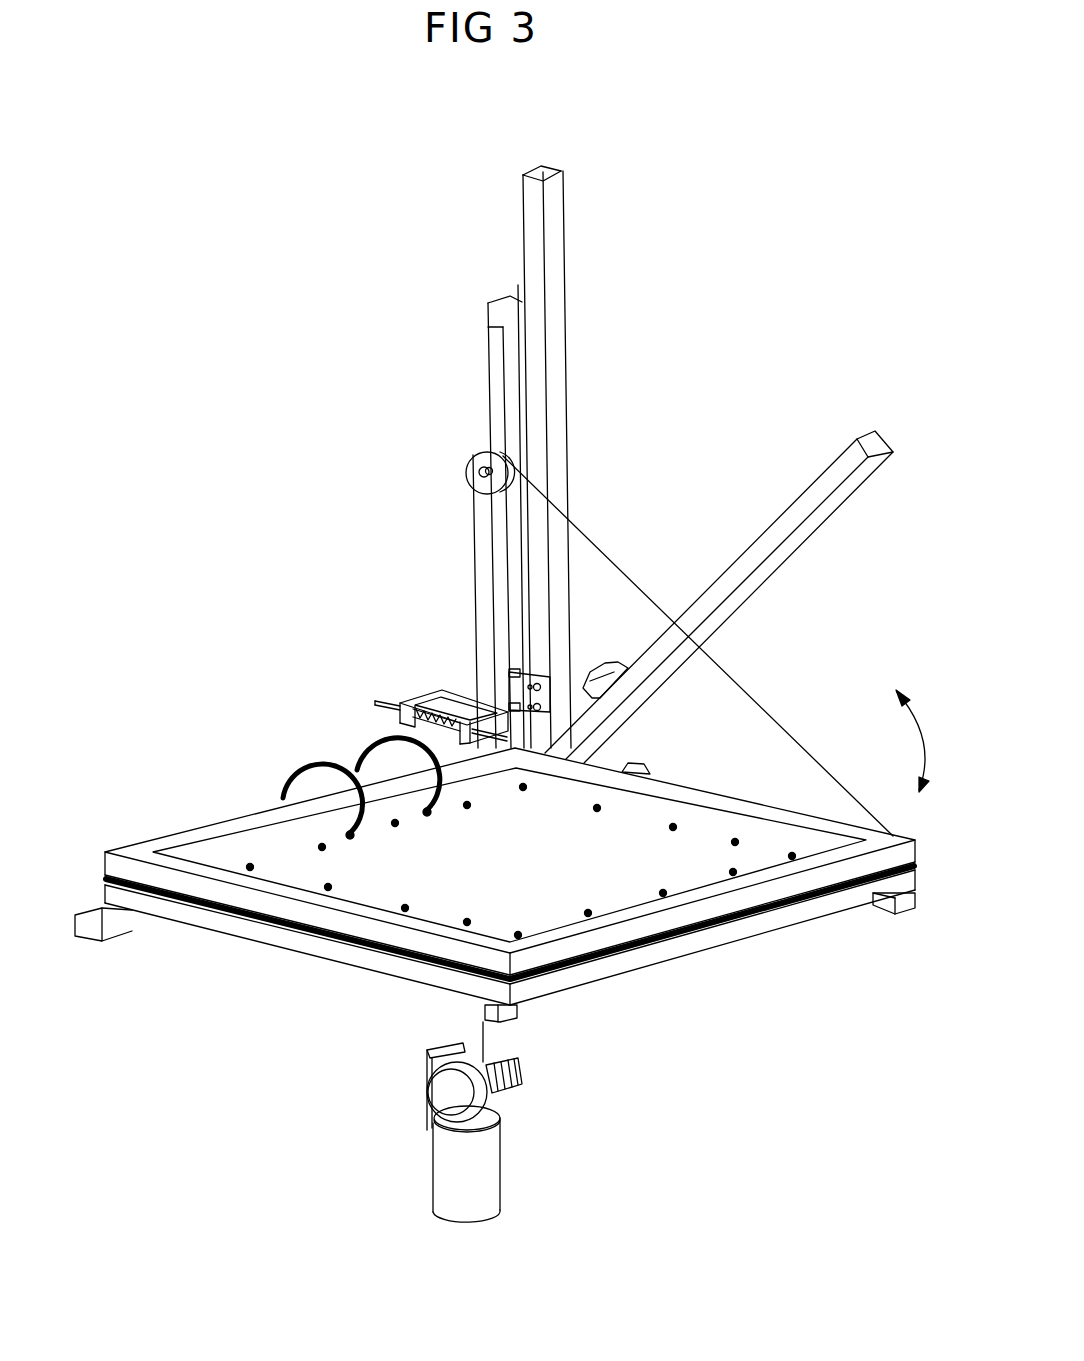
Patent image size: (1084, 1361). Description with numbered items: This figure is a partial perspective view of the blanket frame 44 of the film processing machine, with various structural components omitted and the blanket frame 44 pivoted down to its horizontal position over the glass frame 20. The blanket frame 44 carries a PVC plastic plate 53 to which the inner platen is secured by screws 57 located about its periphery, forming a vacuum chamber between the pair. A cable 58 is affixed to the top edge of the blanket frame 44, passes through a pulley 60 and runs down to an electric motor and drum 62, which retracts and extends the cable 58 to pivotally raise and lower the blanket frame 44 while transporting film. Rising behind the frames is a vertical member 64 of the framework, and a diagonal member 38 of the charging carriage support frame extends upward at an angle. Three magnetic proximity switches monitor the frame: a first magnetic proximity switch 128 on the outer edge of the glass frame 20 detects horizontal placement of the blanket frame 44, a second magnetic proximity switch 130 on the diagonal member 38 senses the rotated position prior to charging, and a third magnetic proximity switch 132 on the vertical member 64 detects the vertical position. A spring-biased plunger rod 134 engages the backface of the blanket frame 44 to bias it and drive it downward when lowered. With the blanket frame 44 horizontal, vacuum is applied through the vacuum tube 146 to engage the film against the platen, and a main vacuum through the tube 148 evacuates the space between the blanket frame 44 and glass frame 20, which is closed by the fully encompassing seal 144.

The glass frame 20 is at (495, 1005).
The diagonal member 38 is at (736, 597).
The blanket frame 44 is at (510, 907).
The PVC plastic plate 53 is at (513, 886).
The screws 57 is at (439, 894).
The cable 58 is at (575, 516).
The pulley 60 is at (451, 428).
The electric motor and drum 62 is at (490, 1181).
The vertical member 64 is at (550, 268).
The first magnetic proximity switch 128 is at (691, 738).
The second magnetic proximity switch 130 is at (631, 654).
The third magnetic proximity switch 132 is at (510, 676).
The spring-biased plunger rod 134 is at (410, 659).
The seal 144 is at (510, 973).
The vacuum tube 146 is at (342, 734).
The tube 148 is at (272, 780).